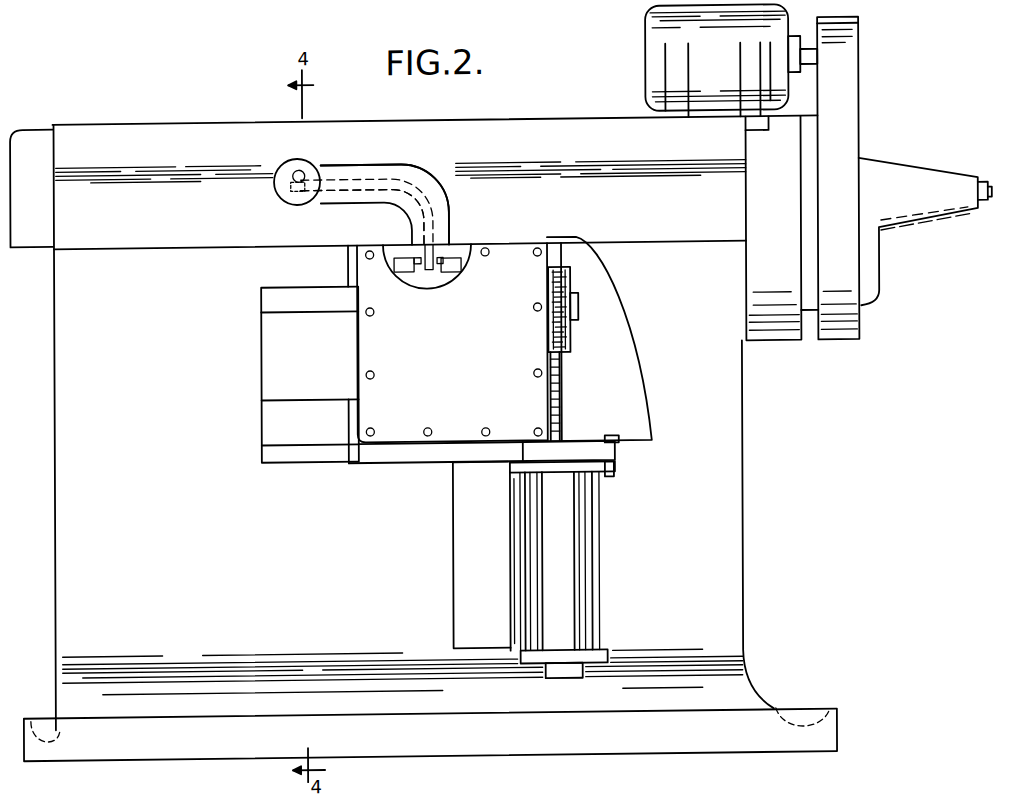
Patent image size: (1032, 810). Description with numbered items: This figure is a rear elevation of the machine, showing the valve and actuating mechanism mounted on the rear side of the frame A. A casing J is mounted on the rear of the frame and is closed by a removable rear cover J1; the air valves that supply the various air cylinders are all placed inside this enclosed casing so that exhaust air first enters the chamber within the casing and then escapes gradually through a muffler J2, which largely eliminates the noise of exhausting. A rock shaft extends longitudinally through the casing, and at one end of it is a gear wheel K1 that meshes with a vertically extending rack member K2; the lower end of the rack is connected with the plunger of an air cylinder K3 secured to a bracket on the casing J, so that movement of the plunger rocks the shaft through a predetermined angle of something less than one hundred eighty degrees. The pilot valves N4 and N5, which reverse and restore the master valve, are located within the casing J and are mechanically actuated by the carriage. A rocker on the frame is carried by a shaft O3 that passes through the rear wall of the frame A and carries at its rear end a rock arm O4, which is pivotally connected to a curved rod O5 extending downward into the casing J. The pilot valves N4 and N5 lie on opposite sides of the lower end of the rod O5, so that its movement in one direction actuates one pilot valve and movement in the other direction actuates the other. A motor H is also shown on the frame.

The frame A is at (70, 499).
The motor H is at (651, 51).
The casing J is at (377, 462).
The removable rear cover J1 is at (503, 268).
The muffler J2 is at (467, 553).
The gear wheel K1 is at (575, 287).
The rack member K2 is at (562, 392).
The air cylinder K3 is at (570, 569).
The pilot valve N4 is at (453, 276).
The pilot valve N5 is at (407, 278).
The shaft O3 is at (325, 156).
The rock arm O4 is at (352, 157).
The curved rod O5 is at (397, 180).